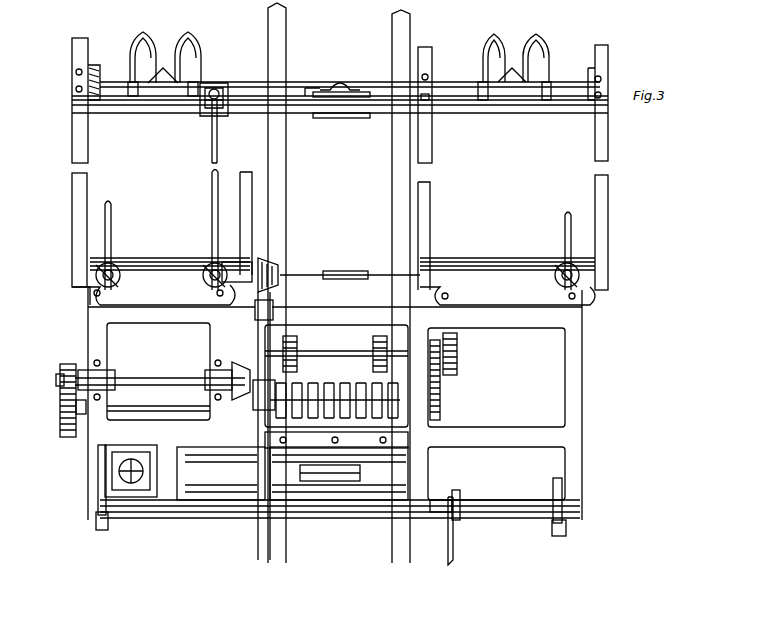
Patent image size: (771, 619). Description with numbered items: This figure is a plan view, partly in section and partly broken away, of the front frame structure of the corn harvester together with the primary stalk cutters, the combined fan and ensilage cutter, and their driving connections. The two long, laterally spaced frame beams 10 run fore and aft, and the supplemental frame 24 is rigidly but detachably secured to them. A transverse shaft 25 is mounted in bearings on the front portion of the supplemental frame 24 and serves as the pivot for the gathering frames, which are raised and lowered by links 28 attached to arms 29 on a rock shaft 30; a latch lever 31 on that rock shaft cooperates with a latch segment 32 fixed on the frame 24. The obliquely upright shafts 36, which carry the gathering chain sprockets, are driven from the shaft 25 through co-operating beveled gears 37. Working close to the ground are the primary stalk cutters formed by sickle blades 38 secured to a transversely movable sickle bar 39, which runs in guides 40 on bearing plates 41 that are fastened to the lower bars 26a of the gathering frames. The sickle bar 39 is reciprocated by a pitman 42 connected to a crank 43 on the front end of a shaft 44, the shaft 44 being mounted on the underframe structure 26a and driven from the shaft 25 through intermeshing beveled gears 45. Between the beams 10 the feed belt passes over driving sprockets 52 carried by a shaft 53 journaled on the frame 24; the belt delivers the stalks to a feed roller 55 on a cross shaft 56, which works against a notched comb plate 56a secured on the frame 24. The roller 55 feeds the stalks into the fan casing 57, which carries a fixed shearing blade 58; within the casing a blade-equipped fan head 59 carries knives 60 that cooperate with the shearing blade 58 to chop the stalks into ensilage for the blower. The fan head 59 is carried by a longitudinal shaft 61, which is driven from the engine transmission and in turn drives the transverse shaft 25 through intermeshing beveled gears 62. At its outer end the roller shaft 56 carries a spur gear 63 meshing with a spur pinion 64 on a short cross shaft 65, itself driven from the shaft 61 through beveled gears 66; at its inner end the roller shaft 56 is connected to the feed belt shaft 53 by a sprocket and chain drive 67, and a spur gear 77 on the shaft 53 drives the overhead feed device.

The frame beams 10 is at (392, 152).
The supplemental frame 24 is at (582, 371).
The transverse shaft 25 is at (140, 276).
The lower bars 26a is at (72, 128).
The links 28 is at (98, 495).
The arms 29 is at (96, 526).
The rock shaft 30 is at (320, 518).
The latch lever 31 is at (448, 560).
The latch segment 32 is at (460, 525).
The obliquely upright shafts 36 is at (212, 218).
The beveled gears 37 is at (203, 263).
The sickle blades 38 is at (163, 66).
The sickle bar 39 is at (363, 82).
The guides 40 is at (130, 82).
The bearing plates 41 is at (214, 82).
The pitman 42 is at (306, 82).
The crank 43 is at (204, 108).
The shaft 44 is at (212, 143).
The beveled gears 45 is at (222, 268).
The driving sprockets 52 is at (298, 350).
The shaft 53 is at (348, 350).
The feed roller 55 is at (400, 386).
The cross shaft 56 is at (120, 412).
The notched comb plate 56a is at (408, 463).
The fan casing 57 is at (166, 497).
The fixed shearing blade 58 is at (393, 441).
The fan head 59 is at (250, 500).
The knives 60 is at (200, 447).
The longitudinal shaft 61 is at (256, 540).
The beveled gears 62 is at (280, 292).
The spur gear 63 is at (60, 412).
The spur pinion 64 is at (66, 364).
The short cross shaft 65 is at (138, 377).
The beveled gears 66 is at (205, 386).
The sprocket and chain drive 67 is at (445, 395).
The spur gear 77 is at (457, 348).